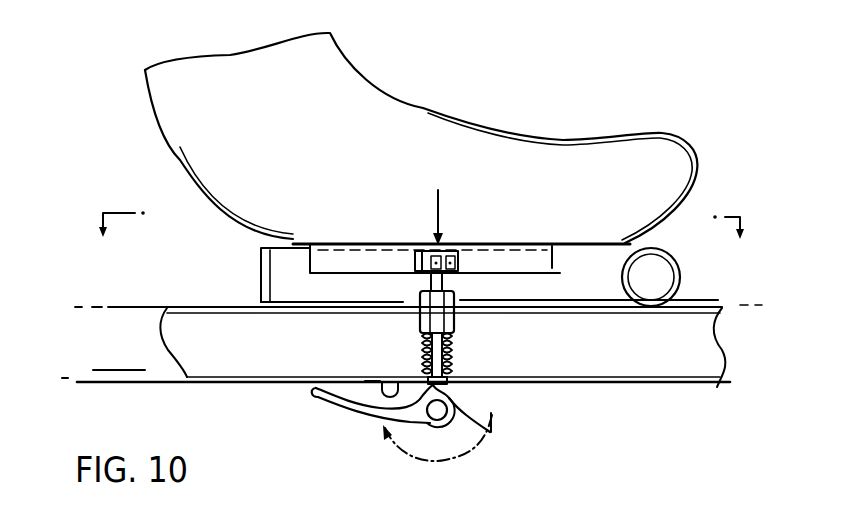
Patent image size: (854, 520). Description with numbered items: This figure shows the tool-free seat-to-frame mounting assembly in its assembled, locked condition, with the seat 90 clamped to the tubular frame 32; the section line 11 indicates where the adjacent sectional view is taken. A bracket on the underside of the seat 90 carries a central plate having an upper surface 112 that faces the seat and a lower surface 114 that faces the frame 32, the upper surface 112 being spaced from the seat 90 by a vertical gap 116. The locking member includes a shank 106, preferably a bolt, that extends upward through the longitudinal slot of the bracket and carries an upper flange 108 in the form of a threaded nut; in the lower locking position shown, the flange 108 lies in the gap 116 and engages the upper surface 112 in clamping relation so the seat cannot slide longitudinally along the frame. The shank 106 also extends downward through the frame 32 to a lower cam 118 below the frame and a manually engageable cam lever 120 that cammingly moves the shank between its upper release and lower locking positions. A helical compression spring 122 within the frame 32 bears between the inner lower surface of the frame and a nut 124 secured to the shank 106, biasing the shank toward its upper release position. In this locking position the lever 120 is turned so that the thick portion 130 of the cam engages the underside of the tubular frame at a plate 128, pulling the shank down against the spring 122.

The section line 11- 11 is at (422, 213).
The frame 32 is at (263, 384).
The seat 90 is at (519, 147).
The shank 106 is at (454, 345).
The upper flange 108 is at (478, 244).
The upper surface 112 is at (556, 266).
The lower surface 114 is at (541, 274).
The vertical gap 116 is at (546, 244).
The lower cam 118 is at (491, 433).
The cam lever 120 is at (323, 398).
The helical compression spring 122 is at (453, 360).
The nut 124 is at (419, 326).
The plate 128 is at (383, 380).
The thick portion 130 is at (449, 392).